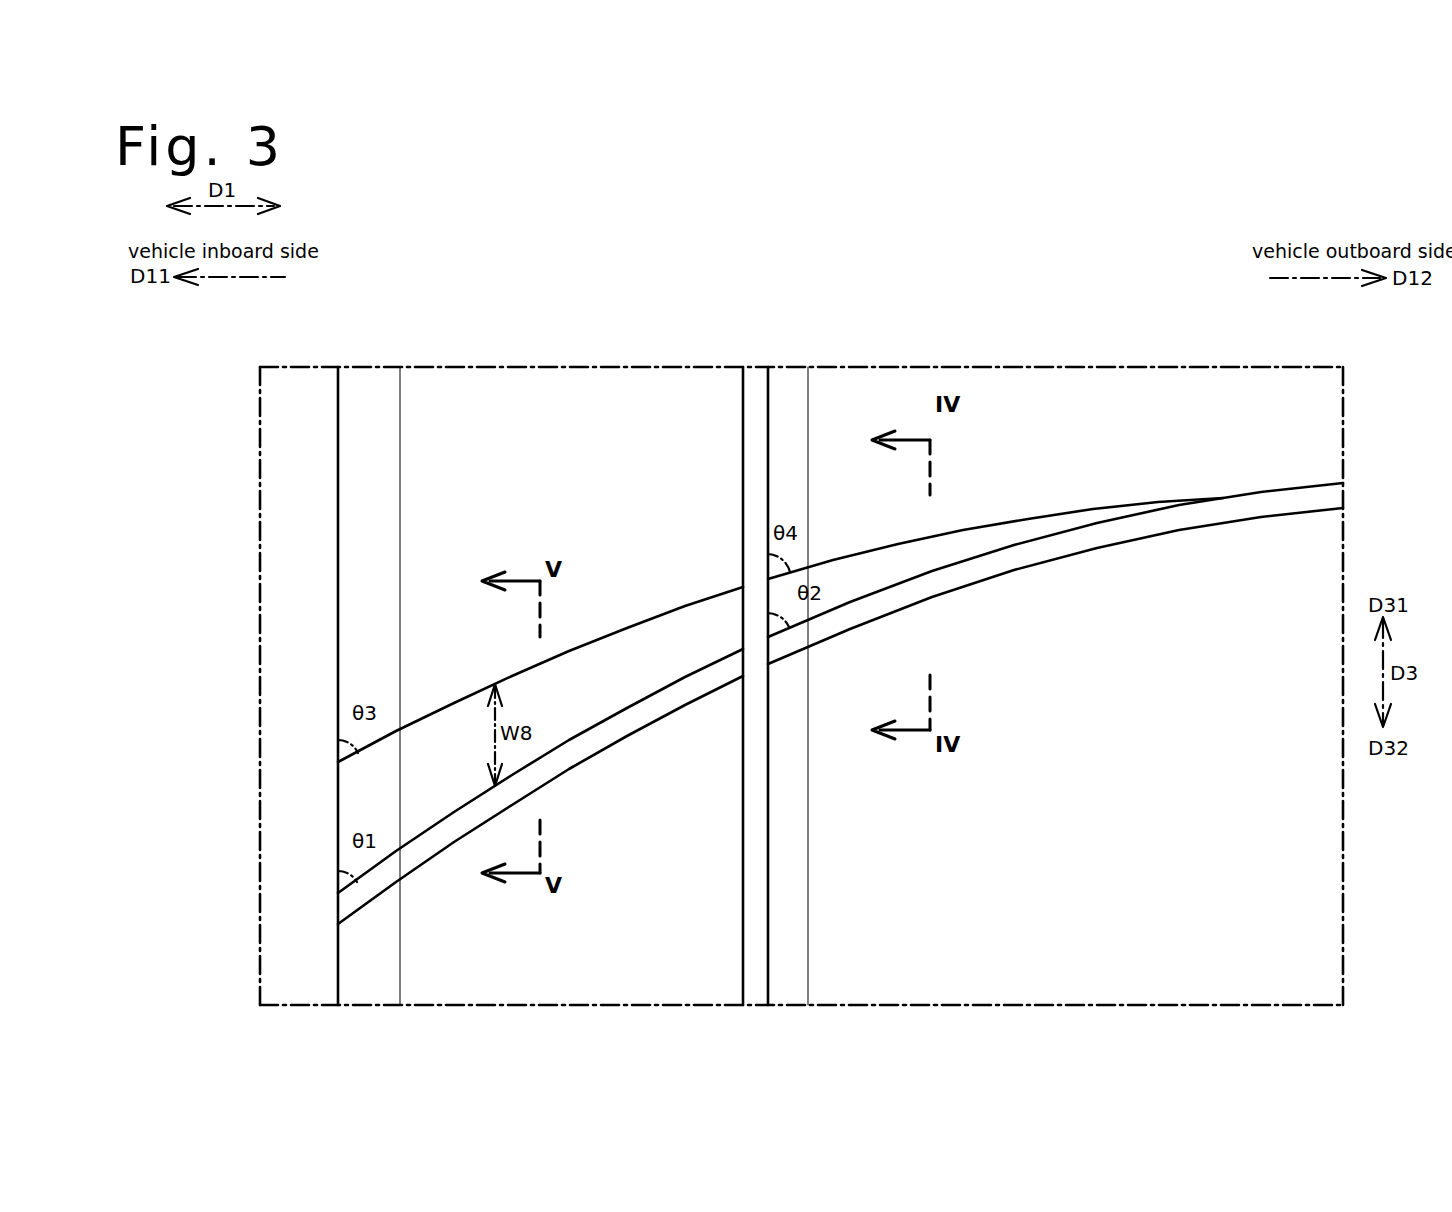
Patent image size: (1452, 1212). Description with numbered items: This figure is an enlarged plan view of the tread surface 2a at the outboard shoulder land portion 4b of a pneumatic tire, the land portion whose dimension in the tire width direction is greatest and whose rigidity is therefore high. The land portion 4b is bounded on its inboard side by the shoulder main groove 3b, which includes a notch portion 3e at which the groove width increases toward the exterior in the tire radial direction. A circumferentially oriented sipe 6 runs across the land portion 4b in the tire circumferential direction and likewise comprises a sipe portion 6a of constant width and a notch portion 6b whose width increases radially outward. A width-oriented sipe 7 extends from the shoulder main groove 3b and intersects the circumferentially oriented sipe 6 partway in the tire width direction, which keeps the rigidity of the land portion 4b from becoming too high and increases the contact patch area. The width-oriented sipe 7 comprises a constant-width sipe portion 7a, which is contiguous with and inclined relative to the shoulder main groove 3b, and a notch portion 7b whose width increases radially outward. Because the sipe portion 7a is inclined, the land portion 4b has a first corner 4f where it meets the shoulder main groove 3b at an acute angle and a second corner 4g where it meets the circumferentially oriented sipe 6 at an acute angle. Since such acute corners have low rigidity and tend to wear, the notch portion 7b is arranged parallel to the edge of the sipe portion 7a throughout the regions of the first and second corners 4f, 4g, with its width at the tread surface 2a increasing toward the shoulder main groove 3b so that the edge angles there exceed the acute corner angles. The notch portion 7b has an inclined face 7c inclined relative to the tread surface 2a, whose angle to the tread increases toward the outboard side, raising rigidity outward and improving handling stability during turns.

The tread surface 2a is at (1310, 418).
The shoulder main groove 3b is at (305, 388).
The notch portion 3e is at (374, 420).
The outboard shoulder land portion 4b is at (662, 385).
The first corner 4f is at (328, 874).
The second corner 4g is at (755, 615).
The circumferentially oriented sipe 6 is at (714, 686).
The sipe portion 6a is at (740, 965).
The notch portion 6b is at (782, 945).
The width-oriented sipe 7 is at (840, 703).
The sipe portion 7a is at (638, 728).
The notch portion 7b is at (452, 745).
The inclined face 7c is at (612, 655).